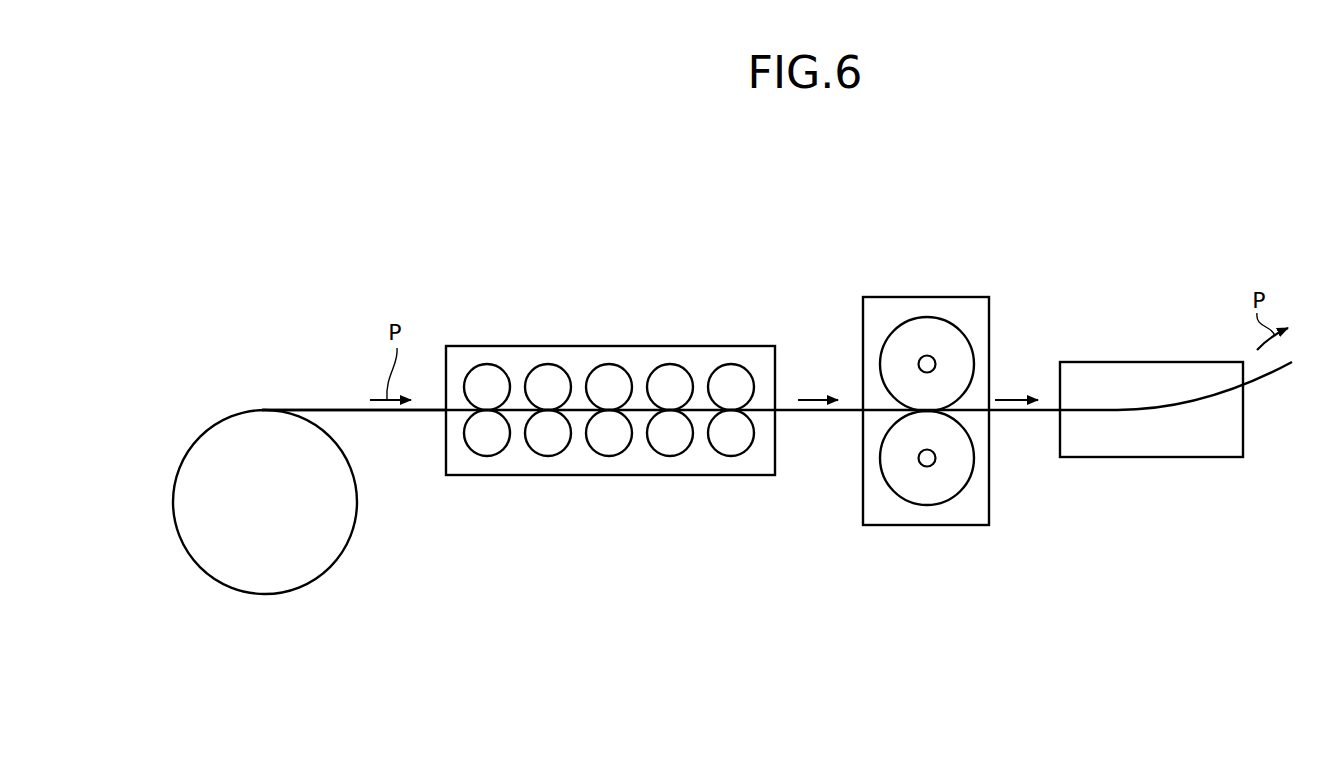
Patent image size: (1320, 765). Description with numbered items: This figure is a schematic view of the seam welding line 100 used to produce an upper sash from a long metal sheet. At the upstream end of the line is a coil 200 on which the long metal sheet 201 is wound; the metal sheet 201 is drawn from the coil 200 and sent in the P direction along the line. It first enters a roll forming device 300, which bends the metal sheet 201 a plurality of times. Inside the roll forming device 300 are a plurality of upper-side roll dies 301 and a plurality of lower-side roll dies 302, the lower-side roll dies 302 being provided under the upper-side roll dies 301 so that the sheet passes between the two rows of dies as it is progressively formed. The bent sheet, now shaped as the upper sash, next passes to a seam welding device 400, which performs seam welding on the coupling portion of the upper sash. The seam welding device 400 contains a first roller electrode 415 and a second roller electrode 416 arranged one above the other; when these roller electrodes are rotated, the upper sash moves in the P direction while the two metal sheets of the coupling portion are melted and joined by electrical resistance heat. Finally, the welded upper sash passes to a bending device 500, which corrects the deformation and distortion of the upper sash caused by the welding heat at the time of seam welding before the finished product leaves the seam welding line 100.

The seam welding line 100 is at (526, 222).
The coil 200 is at (273, 588).
The metal sheet 201 is at (344, 408).
The roll forming device 300 is at (483, 477).
The upper-side roll dies 301 is at (630, 368).
The lower-side roll dies 302 is at (592, 450).
The seam welding device 400 is at (882, 527).
The first roller electrode 415 is at (922, 318).
The second roller electrode 416 is at (953, 500).
The bending device 500 is at (1167, 458).